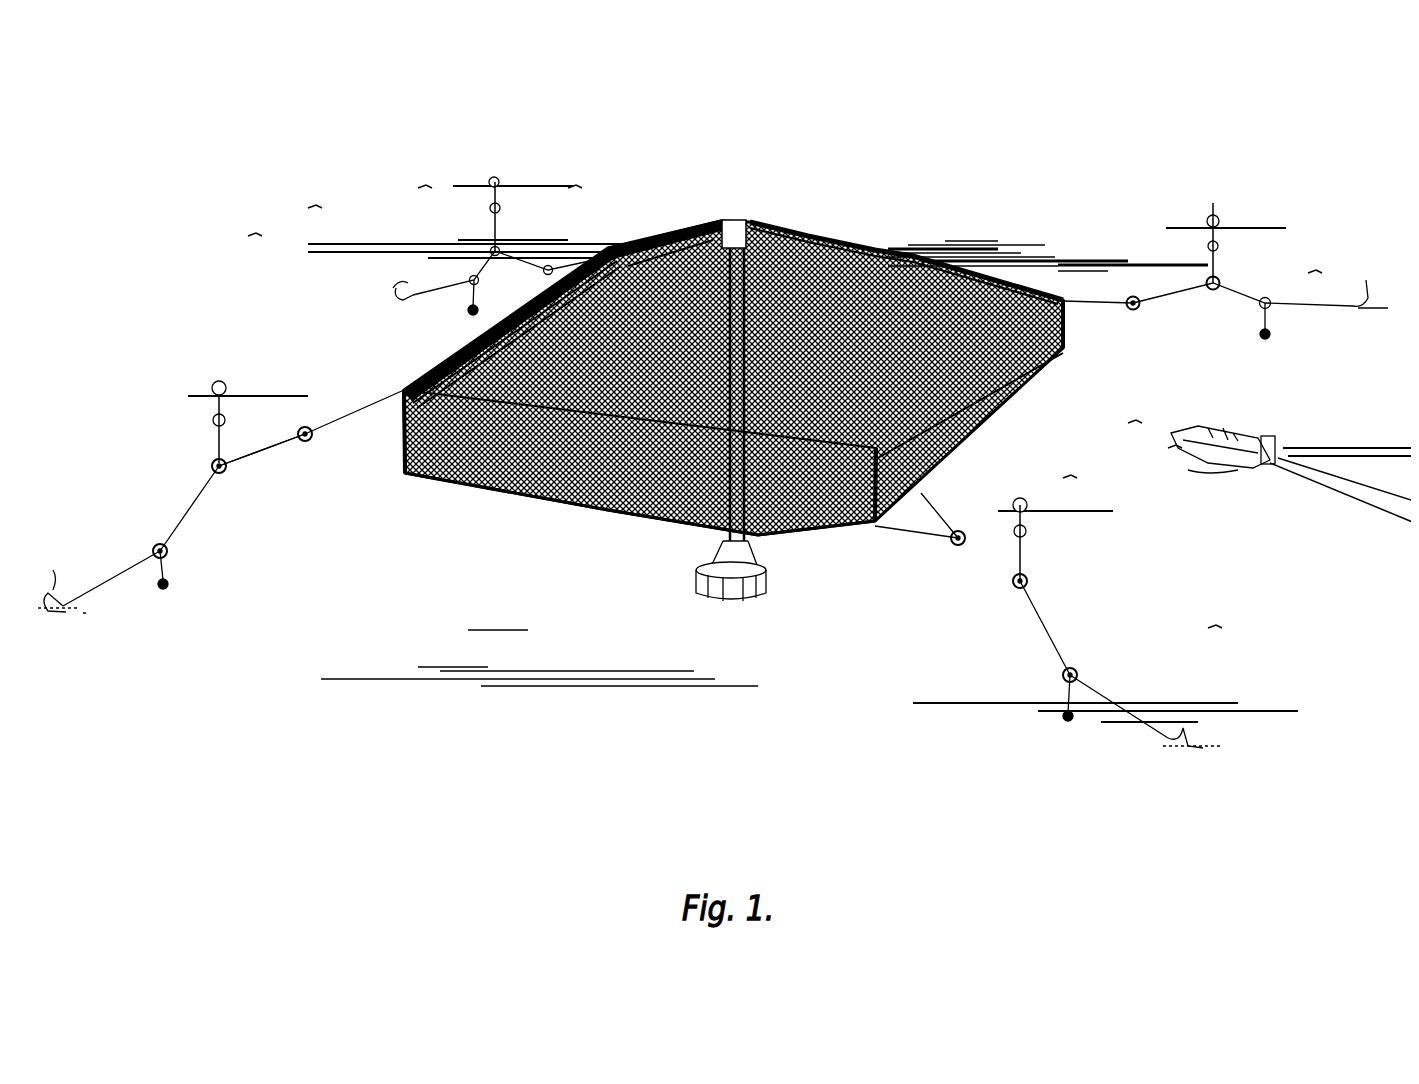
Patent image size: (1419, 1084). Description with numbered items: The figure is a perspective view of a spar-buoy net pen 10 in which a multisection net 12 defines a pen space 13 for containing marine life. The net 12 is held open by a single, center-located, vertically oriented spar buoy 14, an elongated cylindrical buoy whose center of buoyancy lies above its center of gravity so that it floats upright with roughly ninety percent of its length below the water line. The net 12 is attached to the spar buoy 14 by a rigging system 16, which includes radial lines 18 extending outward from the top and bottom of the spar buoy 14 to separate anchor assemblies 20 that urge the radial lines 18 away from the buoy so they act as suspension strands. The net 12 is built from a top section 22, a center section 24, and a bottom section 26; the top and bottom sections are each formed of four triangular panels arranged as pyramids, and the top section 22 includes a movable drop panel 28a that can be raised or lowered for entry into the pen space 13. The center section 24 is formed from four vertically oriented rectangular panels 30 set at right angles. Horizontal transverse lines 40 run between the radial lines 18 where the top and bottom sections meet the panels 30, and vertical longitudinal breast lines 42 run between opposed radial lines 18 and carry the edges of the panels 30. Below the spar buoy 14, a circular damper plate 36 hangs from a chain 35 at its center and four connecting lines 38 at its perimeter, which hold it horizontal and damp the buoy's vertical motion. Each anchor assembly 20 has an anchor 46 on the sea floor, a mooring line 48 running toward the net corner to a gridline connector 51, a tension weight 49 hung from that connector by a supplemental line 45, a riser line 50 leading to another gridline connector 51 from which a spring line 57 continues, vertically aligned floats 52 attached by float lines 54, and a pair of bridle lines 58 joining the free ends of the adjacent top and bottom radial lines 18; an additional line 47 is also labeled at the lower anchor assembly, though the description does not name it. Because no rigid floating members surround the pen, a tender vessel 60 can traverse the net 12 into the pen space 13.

The spar-buoy net pen 10 is at (682, 183).
The multisection net 12 is at (1050, 250).
The pen space 13 is at (495, 485).
The spar buoy 14 is at (733, 212).
The rigging system 16 is at (940, 255).
The radial lines 18 is at (795, 215).
The anchor assemblies 20 is at (445, 235).
The top section 22 is at (612, 240).
The center section 24 is at (1005, 395).
The bottom section 26 is at (600, 515).
The drop panel 28a is at (815, 230).
The vertically oriented panels 30 is at (405, 482).
The chain 35 is at (700, 540).
The damper plate 36 is at (765, 583).
The connecting lines 38 is at (760, 548).
The transverse lines 40 is at (505, 315).
The longitudinal breast lines 42 is at (393, 440).
The supplemental line 45 is at (162, 556).
The anchor 46 is at (1248, 755).
The anchor line 47 is at (1055, 690).
The mooring line 48 is at (95, 585).
The tension weight 49 is at (165, 583).
The riser line 50 is at (180, 505).
The gridline connector 51 is at (145, 530).
The floats 52 is at (205, 378).
The float lines 54 is at (205, 458).
The spring line 57 is at (262, 445).
The bridle lines 58 is at (358, 398).
The tender vessel 60 is at (1215, 462).